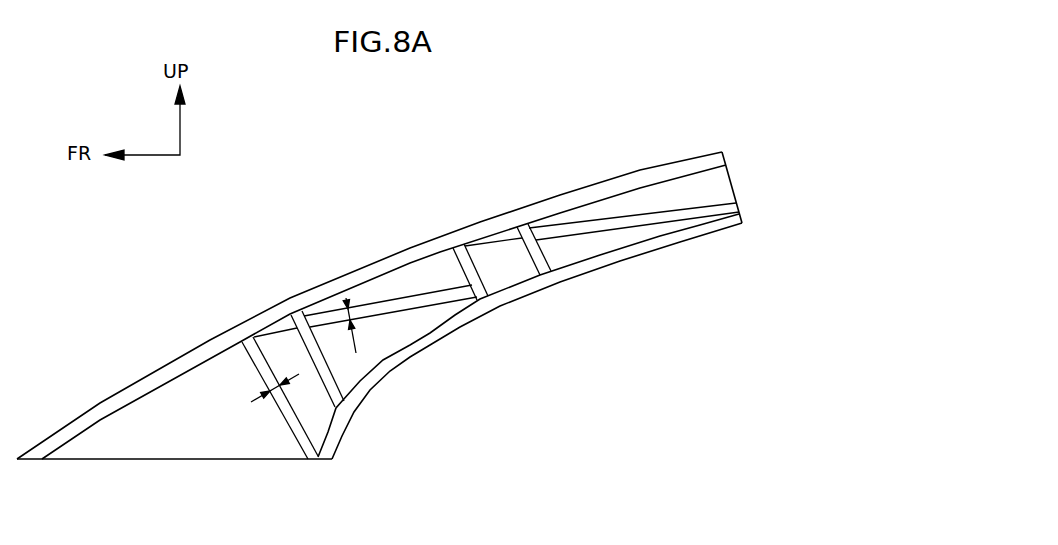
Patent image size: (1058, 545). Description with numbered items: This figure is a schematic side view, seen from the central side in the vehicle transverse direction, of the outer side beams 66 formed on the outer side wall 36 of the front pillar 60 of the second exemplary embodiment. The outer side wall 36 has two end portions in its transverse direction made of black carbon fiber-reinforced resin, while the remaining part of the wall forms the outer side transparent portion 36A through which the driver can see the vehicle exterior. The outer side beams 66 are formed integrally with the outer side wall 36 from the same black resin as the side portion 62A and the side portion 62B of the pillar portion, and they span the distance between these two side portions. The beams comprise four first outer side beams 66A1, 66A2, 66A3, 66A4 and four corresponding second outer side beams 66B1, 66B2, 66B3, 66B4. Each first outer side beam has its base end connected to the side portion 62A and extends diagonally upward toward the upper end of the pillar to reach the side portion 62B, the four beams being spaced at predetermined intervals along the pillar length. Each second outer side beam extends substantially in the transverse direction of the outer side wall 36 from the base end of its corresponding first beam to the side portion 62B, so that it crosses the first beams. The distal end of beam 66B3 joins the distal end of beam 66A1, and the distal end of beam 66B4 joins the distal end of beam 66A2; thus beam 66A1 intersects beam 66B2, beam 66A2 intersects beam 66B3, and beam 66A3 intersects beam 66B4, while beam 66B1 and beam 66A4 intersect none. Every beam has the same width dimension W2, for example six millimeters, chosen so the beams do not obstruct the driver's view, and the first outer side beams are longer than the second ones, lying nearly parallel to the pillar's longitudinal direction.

The front pillar 60 is at (588, 150).
The side portion 62A is at (440, 242).
The side portion 62B is at (492, 307).
The outer side wall 36 is at (720, 182).
The outer side transparent portion 36A is at (185, 444).
The outer side beams 66 is at (456, 315).
The first outer side beam 66A1 is at (277, 327).
The first outer side beam 66A2 is at (383, 298).
The first outer side beam 66A3 is at (498, 230).
The first outer side beam 66A4 is at (652, 210).
The second outer side beam 66B1 is at (292, 433).
The second outer side beam 66B2 is at (332, 376).
The second outer side beam 66B3 is at (470, 268).
The second outer side beam 66B4 is at (535, 255).
The width dimension W2 is at (263, 400).